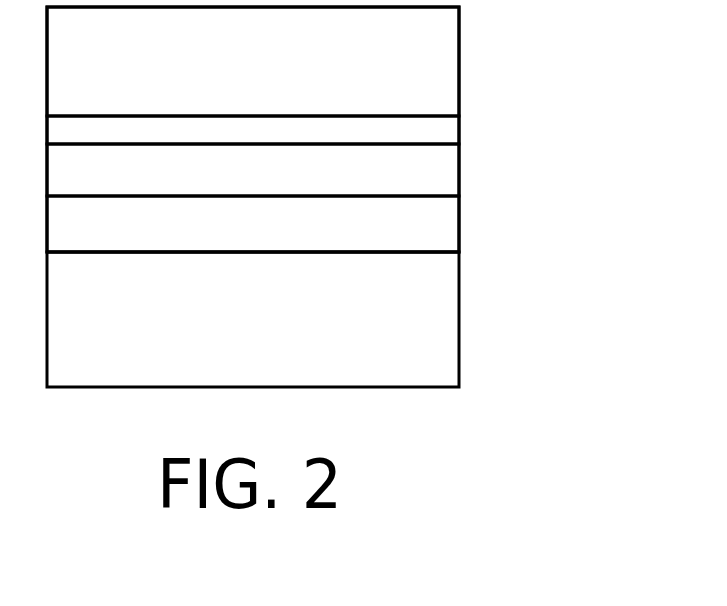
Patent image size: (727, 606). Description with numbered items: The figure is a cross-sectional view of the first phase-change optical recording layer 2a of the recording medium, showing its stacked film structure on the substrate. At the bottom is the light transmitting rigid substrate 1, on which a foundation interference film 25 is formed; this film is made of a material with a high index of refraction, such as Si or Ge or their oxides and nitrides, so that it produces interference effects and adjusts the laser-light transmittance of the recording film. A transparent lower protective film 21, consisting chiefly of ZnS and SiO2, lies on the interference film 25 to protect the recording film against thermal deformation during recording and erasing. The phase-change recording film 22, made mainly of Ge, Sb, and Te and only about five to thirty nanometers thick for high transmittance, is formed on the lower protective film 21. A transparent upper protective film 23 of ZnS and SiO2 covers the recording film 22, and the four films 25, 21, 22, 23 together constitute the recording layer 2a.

The light transmitting rigid substrate 1 is at (437, 339).
The first phase-change optical recording layer 2a is at (557, 45).
The transparent lower protective film 21 is at (437, 172).
The phase-change recording film 22 is at (437, 132).
The transparent upper protective film 23 is at (437, 77).
The foundation interference film 25 is at (437, 232).